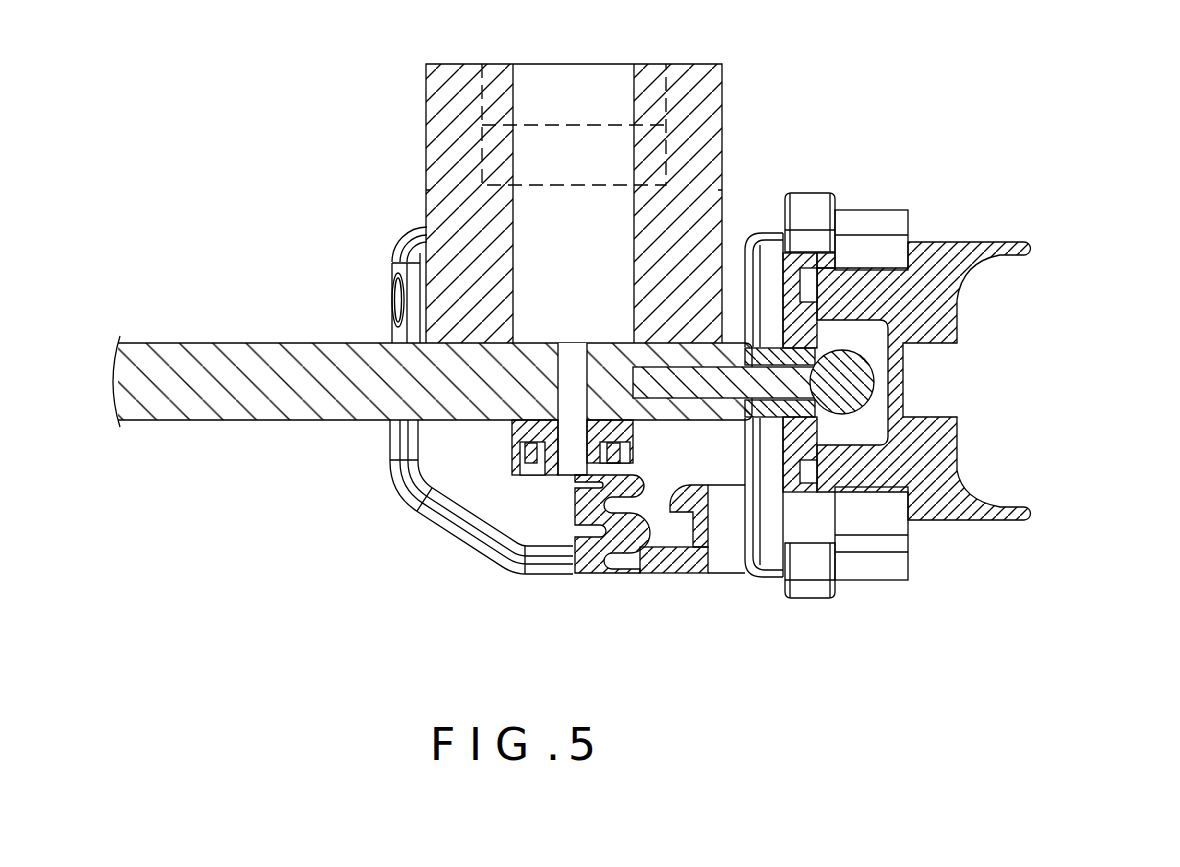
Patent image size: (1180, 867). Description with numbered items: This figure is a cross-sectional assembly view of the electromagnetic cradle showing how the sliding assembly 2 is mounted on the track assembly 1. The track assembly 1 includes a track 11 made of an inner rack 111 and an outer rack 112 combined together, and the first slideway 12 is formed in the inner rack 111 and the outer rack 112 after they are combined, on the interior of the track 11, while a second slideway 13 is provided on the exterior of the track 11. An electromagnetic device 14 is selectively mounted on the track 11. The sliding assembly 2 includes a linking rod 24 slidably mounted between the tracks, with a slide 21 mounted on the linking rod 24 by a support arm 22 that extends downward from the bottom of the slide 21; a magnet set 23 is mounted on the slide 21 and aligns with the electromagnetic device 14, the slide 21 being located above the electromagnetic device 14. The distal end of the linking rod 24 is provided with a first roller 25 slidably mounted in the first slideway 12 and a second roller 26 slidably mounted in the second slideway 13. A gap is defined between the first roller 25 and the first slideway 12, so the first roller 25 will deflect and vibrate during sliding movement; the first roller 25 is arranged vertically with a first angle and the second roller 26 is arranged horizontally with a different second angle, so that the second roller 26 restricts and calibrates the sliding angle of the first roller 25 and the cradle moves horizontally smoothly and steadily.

The track assembly 1 is at (1068, 659).
The sliding assembly 2 is at (232, 165).
The track 11 is at (877, 696).
The first slideway 12 is at (877, 403).
The second slideway 13 is at (760, 513).
The electromagnetic device 14 is at (473, 503).
The slide 21 is at (428, 147).
The support arm 22 is at (437, 318).
The magnet set 23 is at (480, 120).
The linking rod 24 is at (209, 358).
The first roller 25 is at (832, 337).
The second roller 26 is at (683, 507).
The inner rack 111 is at (810, 593).
The outer rack 112 is at (887, 482).